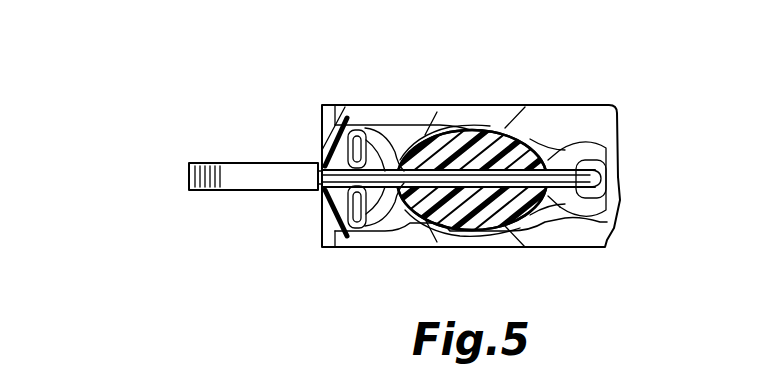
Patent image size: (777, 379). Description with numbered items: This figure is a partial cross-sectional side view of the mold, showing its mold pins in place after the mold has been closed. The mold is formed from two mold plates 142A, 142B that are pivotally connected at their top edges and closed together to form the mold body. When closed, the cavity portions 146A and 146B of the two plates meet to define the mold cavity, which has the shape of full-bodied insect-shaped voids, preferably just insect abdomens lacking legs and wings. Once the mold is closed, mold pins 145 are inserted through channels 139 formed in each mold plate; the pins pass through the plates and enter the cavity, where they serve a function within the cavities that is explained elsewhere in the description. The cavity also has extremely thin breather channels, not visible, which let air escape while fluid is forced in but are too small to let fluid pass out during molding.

The channel 139 is at (394, 128).
The mold plate 142A is at (426, 106).
The mold plate 142B is at (517, 243).
The mold pin 145 is at (494, 130).
The cavity portion 146A is at (460, 124).
The cavity portion 146B is at (458, 238).